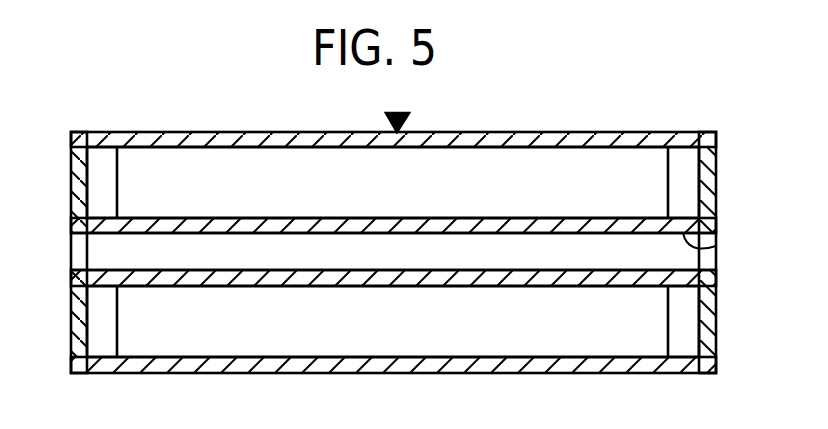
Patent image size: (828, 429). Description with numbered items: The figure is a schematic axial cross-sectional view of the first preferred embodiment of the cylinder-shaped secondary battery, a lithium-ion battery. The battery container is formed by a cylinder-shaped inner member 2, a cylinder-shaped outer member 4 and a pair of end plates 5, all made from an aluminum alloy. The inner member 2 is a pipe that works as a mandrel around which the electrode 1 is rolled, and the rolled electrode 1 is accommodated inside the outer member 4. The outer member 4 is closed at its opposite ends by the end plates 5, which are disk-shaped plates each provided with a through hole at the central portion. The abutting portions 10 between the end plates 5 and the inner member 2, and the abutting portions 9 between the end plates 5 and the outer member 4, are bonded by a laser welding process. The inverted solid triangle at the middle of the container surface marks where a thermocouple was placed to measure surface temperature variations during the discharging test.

The electrode 1 is at (562, 176).
The cylinder-shaped inner member 2 is at (716, 246).
The cylinder-shaped outer member 4 is at (683, 141).
The end plates 5 is at (80, 318).
The abutting portions between the end plates and the outer member 9 is at (86, 143).
The abutting portions between the end plates and the inner member 10 is at (74, 224).